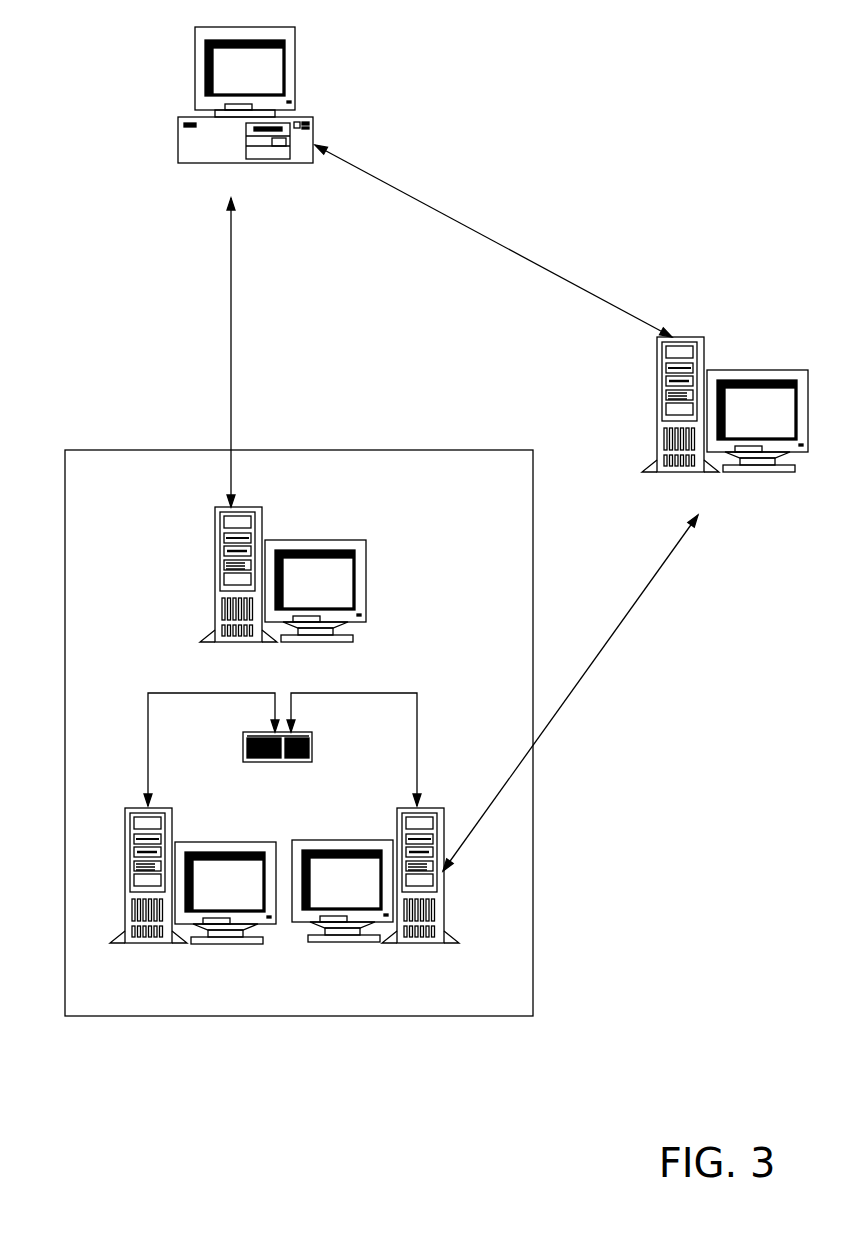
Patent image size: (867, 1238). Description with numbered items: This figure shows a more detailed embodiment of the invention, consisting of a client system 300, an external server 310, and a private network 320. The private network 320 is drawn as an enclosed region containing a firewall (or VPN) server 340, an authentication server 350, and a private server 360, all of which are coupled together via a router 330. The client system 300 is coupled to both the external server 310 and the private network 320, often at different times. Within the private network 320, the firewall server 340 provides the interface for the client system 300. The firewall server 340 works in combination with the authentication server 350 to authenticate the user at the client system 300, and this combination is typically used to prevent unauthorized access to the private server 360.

The client system 300 is at (313, 128).
The external server 310 is at (703, 352).
The private network 320 is at (533, 847).
The router 330 is at (312, 757).
The firewall server 340 is at (262, 530).
The authentication server 350 is at (443, 810).
The private server 360 is at (125, 832).